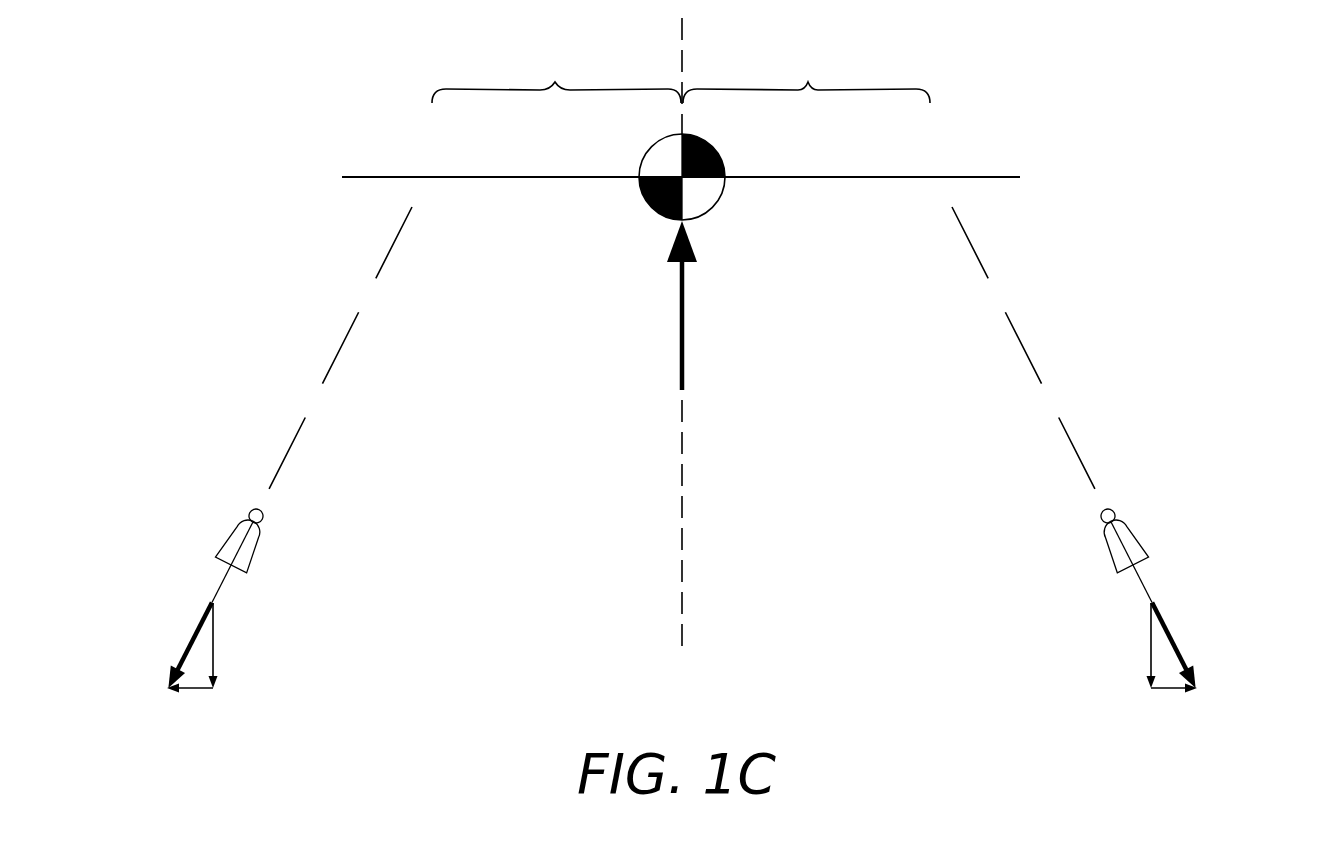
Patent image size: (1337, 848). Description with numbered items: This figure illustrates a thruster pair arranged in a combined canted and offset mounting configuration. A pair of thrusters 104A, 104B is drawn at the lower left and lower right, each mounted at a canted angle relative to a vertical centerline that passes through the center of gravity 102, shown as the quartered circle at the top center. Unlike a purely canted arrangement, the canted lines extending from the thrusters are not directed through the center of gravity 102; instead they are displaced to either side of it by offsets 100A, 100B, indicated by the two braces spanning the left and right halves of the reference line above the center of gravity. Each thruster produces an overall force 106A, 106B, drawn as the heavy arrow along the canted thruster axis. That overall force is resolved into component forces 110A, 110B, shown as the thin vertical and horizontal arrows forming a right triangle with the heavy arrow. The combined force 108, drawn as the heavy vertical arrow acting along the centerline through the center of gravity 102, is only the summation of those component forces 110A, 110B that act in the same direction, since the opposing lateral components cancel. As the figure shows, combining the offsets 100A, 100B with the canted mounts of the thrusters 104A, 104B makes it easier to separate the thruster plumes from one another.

The left half of listening area 100A is at (556, 71).
The right half of listening area 100B is at (806, 71).
The listener position 102 is at (732, 220).
The left loudspeaker 104A is at (213, 508).
The right loudspeaker 104B is at (1150, 510).
The left loudspeaker sound direction vector 106A is at (172, 626).
The right loudspeaker sound direction vector 106B is at (1196, 626).
The resultant sound direction toward listener 108 is at (650, 312).
The component vectors of left loudspeaker direction 110A is at (235, 651).
The component vectors of right loudspeaker direction 110B is at (1130, 645).